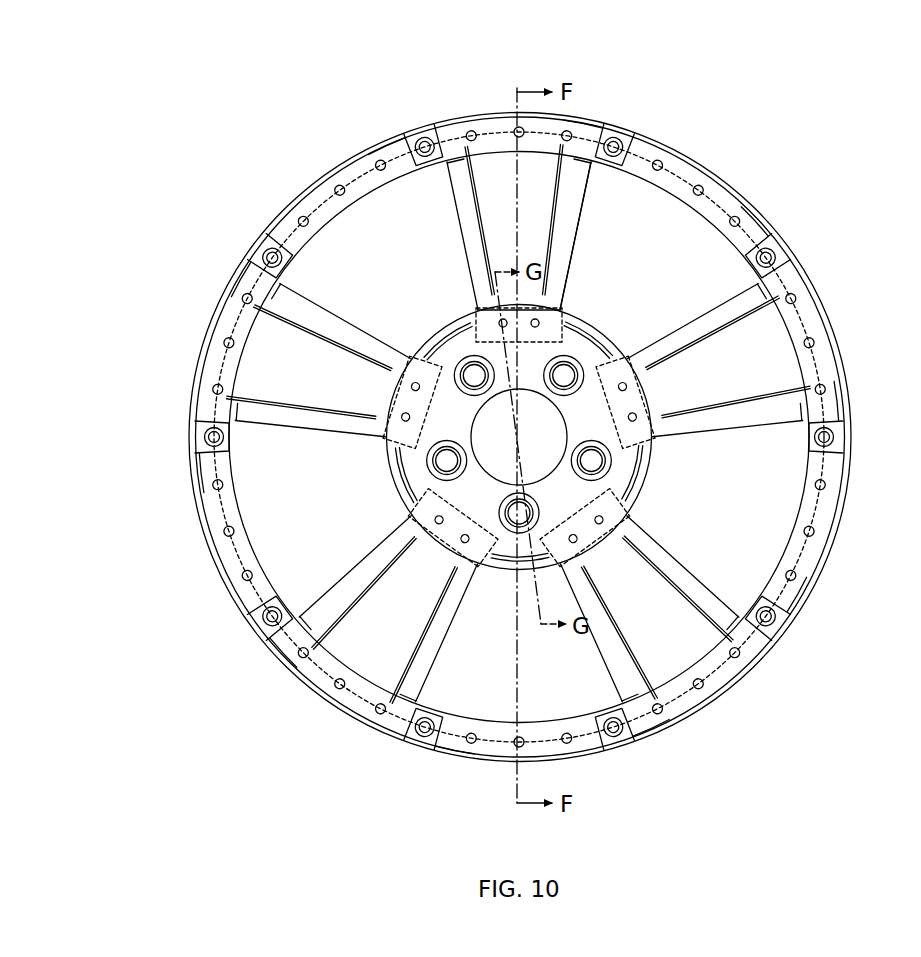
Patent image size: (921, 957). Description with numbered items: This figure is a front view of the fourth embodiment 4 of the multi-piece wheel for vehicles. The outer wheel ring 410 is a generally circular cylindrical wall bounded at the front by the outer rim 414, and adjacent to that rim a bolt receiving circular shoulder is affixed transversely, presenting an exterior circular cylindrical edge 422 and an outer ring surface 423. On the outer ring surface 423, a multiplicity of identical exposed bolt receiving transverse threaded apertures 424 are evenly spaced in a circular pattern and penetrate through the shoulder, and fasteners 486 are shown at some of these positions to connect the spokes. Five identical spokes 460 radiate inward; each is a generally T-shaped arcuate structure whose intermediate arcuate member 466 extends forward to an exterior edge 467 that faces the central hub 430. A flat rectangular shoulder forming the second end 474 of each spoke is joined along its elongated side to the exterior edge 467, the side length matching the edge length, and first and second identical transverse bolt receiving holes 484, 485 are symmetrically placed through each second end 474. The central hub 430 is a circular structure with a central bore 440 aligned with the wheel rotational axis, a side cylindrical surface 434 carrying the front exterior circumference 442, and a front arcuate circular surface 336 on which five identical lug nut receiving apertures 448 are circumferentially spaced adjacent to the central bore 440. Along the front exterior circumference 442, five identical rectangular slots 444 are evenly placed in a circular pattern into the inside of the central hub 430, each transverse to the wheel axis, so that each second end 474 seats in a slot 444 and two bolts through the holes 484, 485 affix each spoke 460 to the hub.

The fourth embodiment 4 is at (244, 114).
The outer wheel ring 410 is at (343, 224).
The outer rim 414 is at (338, 166).
The exterior circular cylindrical edge 422 is at (380, 185).
The outer ring surface 423 is at (690, 160).
The bolt receiving transverse threaded apertures 424 is at (375, 160).
The central hub 430 is at (607, 329).
The side cylindrical surface 434 is at (637, 490).
The front arcuate circular surface 336 is at (586, 503).
The central bore 440 is at (523, 460).
The front exterior circumference 442 is at (388, 455).
The rectangular slots 444 is at (488, 328).
The lug nut receiving apertures 448 is at (470, 377).
The spokes 460 is at (586, 226).
The intermediate arcuate member 466 is at (505, 207).
The exterior edge 467 is at (584, 168).
The second end 474 is at (407, 410).
The first transverse bolt receiving hole 484 is at (538, 321).
The second transverse bolt receiving hole 485 is at (500, 320).
The rim fasteners 486 is at (414, 142).